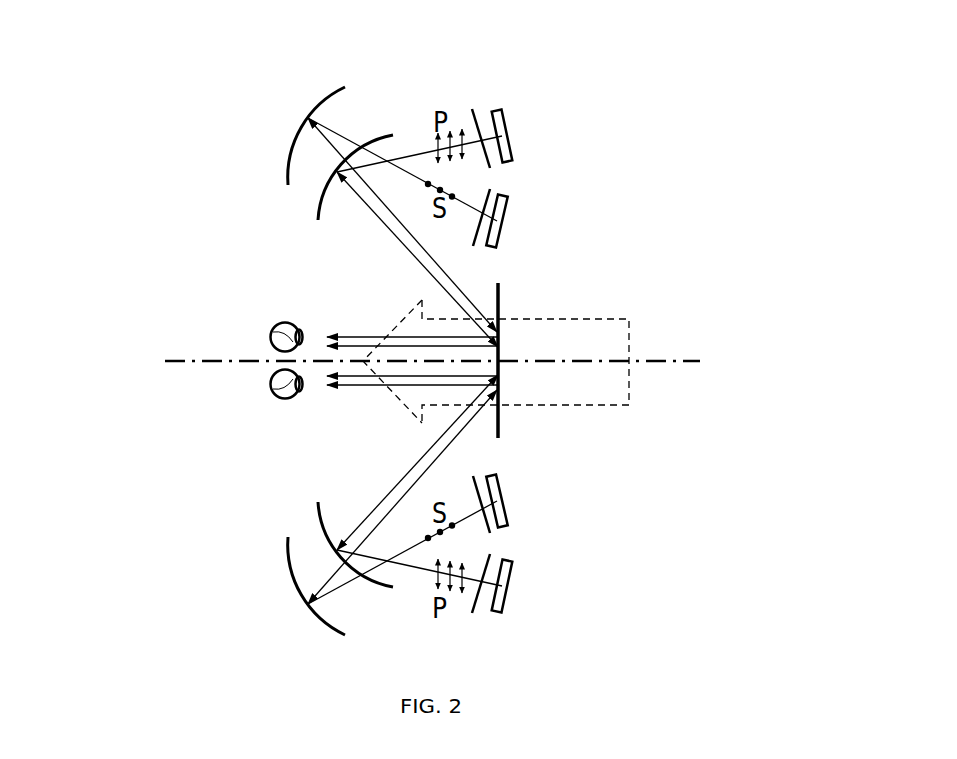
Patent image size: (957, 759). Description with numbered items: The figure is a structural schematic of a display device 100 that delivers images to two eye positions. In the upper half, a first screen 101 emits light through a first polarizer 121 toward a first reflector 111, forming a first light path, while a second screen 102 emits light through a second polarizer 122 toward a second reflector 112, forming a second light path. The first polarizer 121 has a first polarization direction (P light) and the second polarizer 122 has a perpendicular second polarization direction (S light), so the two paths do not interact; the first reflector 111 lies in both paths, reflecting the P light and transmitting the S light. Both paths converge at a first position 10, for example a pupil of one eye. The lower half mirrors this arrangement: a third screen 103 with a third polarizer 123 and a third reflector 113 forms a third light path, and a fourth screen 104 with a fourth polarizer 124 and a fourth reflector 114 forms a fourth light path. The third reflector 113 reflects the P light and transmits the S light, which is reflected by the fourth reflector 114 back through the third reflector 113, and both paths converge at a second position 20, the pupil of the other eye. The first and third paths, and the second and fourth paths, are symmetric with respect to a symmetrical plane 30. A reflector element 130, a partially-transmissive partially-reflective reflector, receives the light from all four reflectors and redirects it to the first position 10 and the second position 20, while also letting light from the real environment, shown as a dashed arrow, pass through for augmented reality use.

The display device 100 is at (152, 76).
The first position 10 is at (271, 337).
The second position 20 is at (271, 386).
The symmetrical plane 30 is at (640, 361).
The reflector element 130 is at (500, 413).
The first screen 101 is at (512, 143).
The second screen 102 is at (509, 216).
The third screen 103 is at (512, 582).
The fourth screen 104 is at (510, 512).
The first reflector 111 is at (320, 207).
The second reflector 112 is at (317, 105).
The third reflector 113 is at (315, 522).
The fourth reflector 114 is at (308, 617).
The first polarizer 121 is at (474, 109).
The second polarizer 122 is at (474, 247).
The third polarizer 123 is at (473, 612).
The fourth polarizer 124 is at (474, 478).